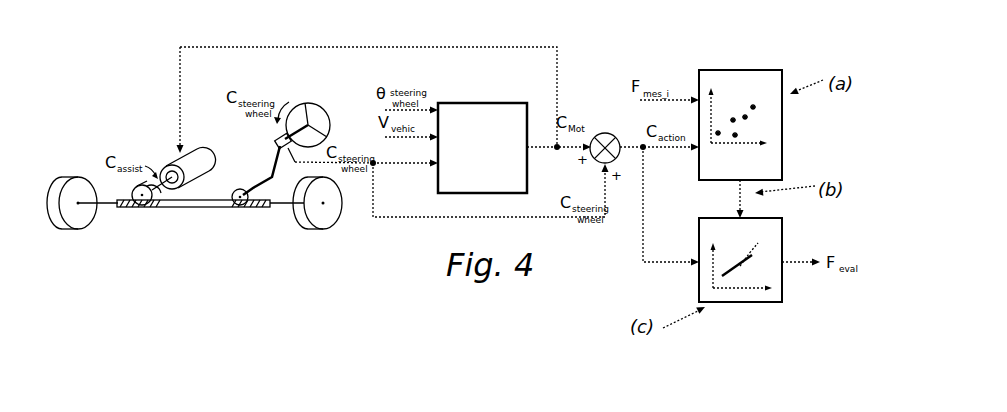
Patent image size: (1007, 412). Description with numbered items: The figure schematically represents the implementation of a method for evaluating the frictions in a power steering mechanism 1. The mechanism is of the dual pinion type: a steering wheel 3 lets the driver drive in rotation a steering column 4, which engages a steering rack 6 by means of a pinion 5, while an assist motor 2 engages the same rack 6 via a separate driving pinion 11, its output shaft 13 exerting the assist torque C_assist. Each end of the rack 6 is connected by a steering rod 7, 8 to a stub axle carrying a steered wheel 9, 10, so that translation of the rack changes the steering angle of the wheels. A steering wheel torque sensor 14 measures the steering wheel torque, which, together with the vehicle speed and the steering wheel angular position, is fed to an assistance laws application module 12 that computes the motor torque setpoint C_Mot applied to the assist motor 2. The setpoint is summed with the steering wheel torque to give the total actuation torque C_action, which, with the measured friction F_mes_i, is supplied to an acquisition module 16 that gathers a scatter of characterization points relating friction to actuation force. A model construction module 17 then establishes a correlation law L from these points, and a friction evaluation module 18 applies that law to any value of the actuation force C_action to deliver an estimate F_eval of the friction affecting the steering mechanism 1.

The power steering mechanism 1 is at (212, 269).
The assist motor 2 is at (197, 170).
The steering wheel 3 is at (323, 104).
The steering column 4 is at (273, 160).
The pinion 5 is at (240, 208).
The steering rack 6 is at (197, 208).
The steering rod 7 is at (283, 206).
The steering rod 8 is at (107, 206).
The steered wheel 9 is at (323, 222).
The steered wheel 10 is at (75, 222).
The driving pinion 11 is at (140, 208).
The assistance laws application module 12 is at (442, 178).
The output shaft 13 is at (167, 158).
The steering wheel torque sensor 14 is at (277, 135).
The acquisition module 16 is at (782, 118).
The model construction module 17 is at (740, 195).
The friction evaluation module 18 is at (783, 288).